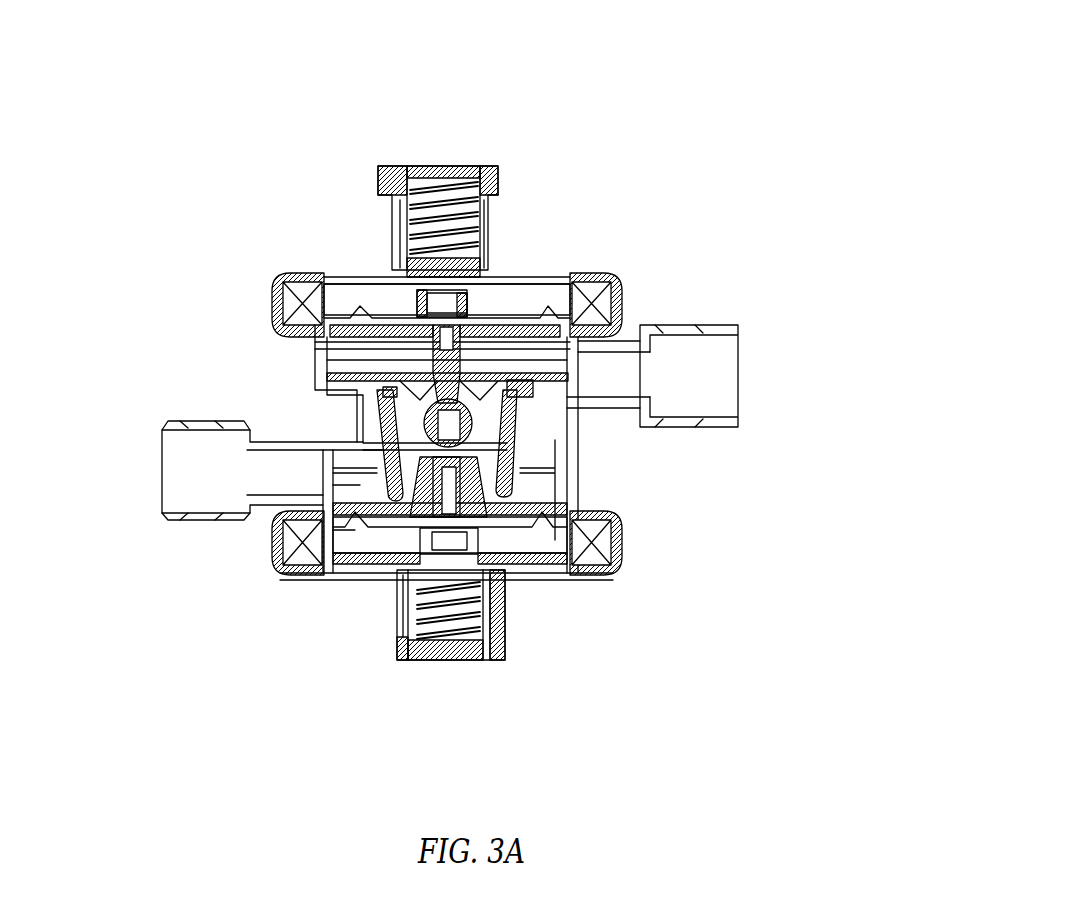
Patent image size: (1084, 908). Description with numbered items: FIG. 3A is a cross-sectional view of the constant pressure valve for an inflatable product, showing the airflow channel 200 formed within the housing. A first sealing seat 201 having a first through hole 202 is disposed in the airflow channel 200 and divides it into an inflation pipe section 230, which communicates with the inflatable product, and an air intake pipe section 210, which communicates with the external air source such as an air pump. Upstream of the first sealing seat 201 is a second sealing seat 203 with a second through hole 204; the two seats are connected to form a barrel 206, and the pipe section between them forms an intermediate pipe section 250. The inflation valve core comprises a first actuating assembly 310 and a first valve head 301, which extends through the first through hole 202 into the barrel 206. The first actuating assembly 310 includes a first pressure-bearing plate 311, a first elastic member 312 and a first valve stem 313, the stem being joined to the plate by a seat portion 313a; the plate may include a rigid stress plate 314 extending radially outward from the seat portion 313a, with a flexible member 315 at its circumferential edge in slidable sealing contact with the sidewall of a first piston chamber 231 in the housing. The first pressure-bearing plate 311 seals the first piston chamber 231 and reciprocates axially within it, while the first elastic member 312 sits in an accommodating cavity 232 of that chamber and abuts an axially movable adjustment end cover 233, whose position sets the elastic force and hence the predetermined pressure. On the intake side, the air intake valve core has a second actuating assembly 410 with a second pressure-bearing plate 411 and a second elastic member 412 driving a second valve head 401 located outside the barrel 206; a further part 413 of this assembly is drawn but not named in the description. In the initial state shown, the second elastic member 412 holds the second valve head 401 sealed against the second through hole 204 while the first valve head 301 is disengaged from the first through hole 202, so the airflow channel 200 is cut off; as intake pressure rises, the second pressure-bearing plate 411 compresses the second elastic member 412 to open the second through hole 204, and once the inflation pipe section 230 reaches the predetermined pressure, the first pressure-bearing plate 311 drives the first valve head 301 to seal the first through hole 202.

The airflow channel 200 is at (825, 507).
The first sealing seat 201 is at (430, 375).
The first through hole 202 is at (392, 352).
The second sealing seat 203 is at (325, 553).
The second through hole 204 is at (400, 540).
The barrel 206 is at (195, 605).
The air intake pipe section 210 is at (525, 488).
The inflation pipe section 230 is at (624, 300).
The first piston chamber 231 is at (530, 272).
The accommodating cavity 232 is at (503, 266).
The adjustment end cover 233 is at (452, 165).
The intermediate pipe section 250 is at (545, 441).
The first valve head 301 is at (360, 407).
The first actuating assembly 310 is at (203, 195).
The first pressure-bearing plate 311 is at (313, 178).
The first elastic member 312 is at (450, 225).
The first valve stem 313 is at (270, 335).
The seat portion 313a is at (470, 315).
The rigid stress plate 314 is at (412, 298).
The flexible member 315 is at (398, 330).
The second valve head 401 is at (625, 548).
The second actuating assembly 410 is at (397, 655).
The second pressure-bearing plate 411 is at (507, 575).
The second elastic member 412 is at (503, 643).
The lower flange 413 is at (580, 575).